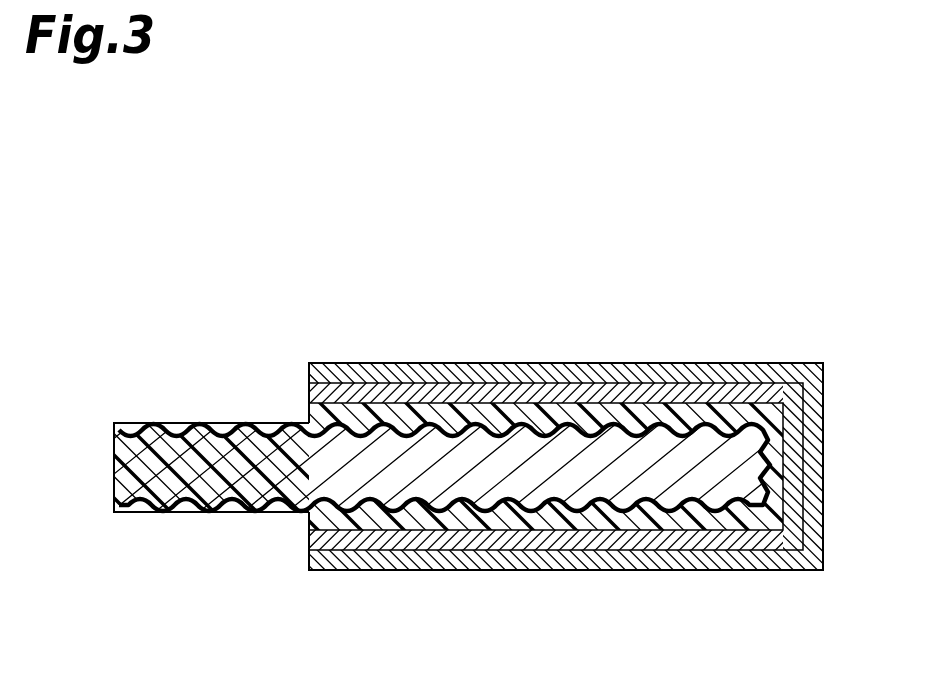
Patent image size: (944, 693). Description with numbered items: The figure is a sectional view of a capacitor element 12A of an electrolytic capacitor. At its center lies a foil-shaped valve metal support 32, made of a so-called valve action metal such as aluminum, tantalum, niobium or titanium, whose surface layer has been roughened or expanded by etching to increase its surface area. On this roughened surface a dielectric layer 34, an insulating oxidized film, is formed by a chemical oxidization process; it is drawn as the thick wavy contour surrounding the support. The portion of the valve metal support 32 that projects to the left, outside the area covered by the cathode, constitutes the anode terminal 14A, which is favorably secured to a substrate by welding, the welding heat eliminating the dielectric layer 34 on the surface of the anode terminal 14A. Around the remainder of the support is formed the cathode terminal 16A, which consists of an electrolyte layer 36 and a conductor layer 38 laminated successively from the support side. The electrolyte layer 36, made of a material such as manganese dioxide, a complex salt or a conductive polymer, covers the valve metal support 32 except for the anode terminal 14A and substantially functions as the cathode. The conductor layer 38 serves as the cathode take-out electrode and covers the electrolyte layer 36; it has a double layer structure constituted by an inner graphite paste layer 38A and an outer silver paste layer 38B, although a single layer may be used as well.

The capacitor element 12A is at (738, 128).
The anode terminal 14A is at (208, 513).
The cathode terminal 16A is at (792, 223).
The valve metal support 32 is at (452, 455).
The dielectric layer 34 is at (563, 430).
The electrolyte layer 36 is at (640, 412).
The conductor layer 38 is at (683, 272).
The graphite paste layer 38A is at (705, 392).
The silver paste layer 38B is at (762, 373).